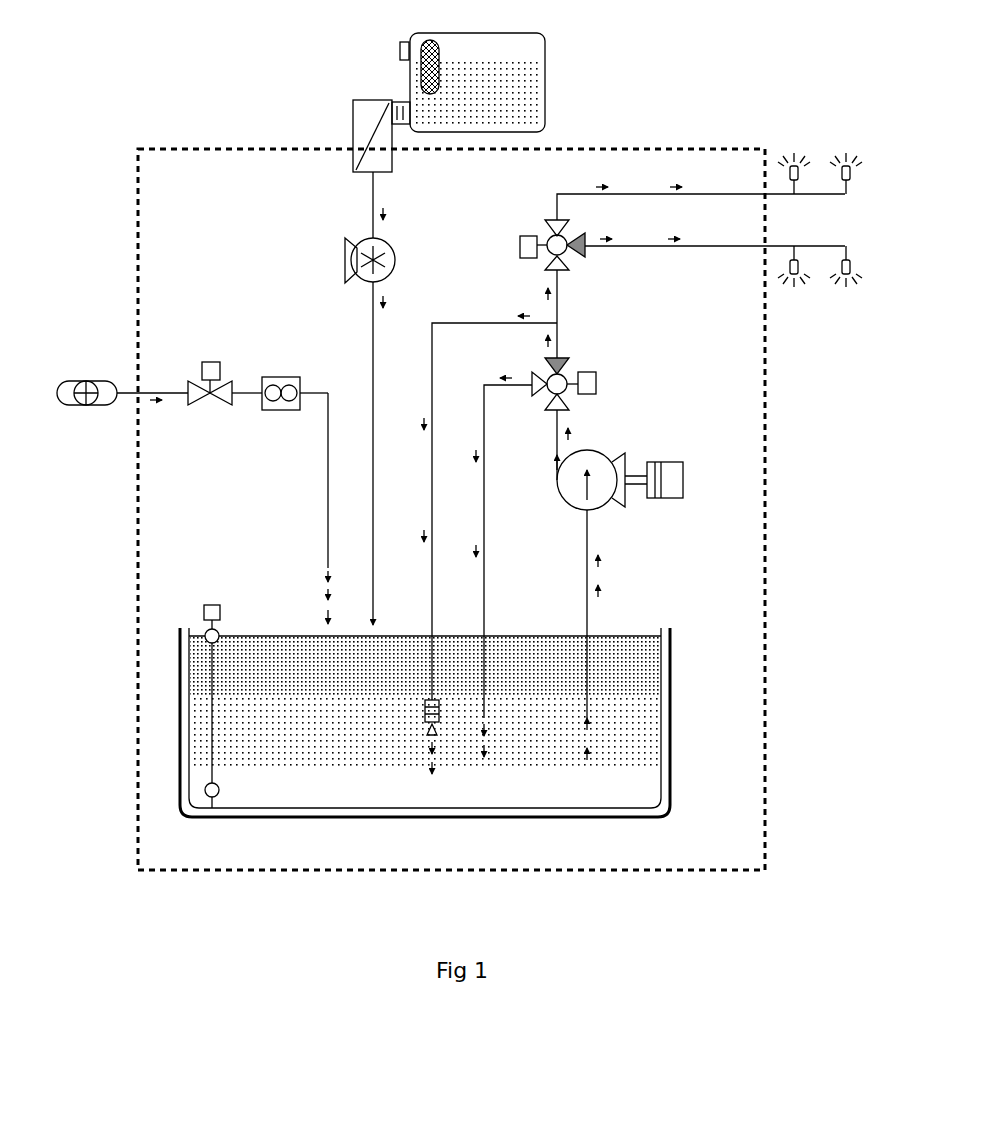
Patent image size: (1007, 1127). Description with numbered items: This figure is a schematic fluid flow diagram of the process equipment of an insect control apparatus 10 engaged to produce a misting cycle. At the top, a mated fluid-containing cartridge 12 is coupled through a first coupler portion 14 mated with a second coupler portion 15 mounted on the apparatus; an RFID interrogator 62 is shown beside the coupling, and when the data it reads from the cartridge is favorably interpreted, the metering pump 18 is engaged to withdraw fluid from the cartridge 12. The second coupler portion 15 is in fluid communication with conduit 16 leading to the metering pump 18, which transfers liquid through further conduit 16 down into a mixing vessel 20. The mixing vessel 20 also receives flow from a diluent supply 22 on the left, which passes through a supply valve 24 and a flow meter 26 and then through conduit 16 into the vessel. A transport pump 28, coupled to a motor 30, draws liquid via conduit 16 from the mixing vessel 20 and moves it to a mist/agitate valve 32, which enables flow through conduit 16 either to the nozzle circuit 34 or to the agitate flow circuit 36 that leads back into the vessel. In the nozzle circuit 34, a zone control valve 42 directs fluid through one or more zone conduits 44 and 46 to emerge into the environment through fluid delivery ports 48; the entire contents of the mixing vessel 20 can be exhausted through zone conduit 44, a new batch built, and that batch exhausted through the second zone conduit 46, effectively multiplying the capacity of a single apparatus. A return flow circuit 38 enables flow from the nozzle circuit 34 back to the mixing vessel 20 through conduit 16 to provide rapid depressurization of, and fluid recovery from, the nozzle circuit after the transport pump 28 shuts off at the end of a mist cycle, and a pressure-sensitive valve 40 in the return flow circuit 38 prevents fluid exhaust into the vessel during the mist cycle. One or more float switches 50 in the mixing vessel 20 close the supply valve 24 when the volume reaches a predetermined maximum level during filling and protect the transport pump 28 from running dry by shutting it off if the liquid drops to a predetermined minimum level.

The insect control apparatus 10 is at (637, 147).
The fluid-containing cartridge 12 is at (550, 67).
The first coupler portion 14 is at (401, 98).
The second coupler portion 15 is at (395, 166).
The conduit 16 is at (368, 222).
The metering pump 18 is at (345, 255).
The mixing vessel 20 is at (676, 690).
The diluent supply 22 is at (86, 379).
The supply valve 24 is at (200, 368).
The flow meter 26 is at (287, 375).
The transport pump 28 is at (562, 501).
The motor 30 is at (688, 482).
The mist/agitate valve 32 is at (600, 373).
The nozzle circuit 34 is at (560, 337).
The agitate flow circuit 36 is at (490, 453).
The return flow circuit 38 is at (425, 474).
The pressure-sensitive valve 40 is at (421, 708).
The zone control valve 42 is at (516, 232).
The zone conduit 44 is at (648, 191).
The second zone conduit 46 is at (672, 248).
The fluid delivery ports 48 is at (842, 160).
The float switch 50 is at (200, 603).
The RFID interrogator 62 is at (351, 118).